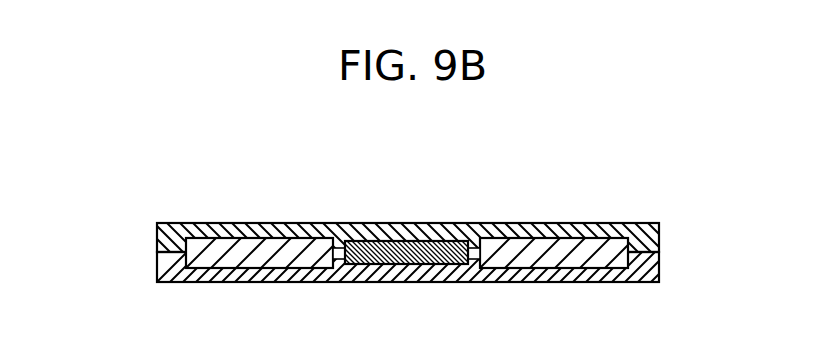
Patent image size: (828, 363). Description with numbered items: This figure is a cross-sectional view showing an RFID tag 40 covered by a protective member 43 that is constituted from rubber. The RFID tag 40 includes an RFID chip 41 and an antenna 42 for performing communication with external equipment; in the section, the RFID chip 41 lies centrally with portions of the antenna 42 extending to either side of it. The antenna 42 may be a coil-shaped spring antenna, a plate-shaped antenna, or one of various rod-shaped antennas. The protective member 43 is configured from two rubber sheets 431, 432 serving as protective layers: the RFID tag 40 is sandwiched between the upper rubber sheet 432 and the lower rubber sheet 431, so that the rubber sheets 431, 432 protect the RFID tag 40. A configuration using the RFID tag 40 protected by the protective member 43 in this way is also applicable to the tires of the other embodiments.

The RFID tag 40 is at (435, 188).
The RFID chip 41 is at (406, 217).
The antenna 42 is at (307, 233).
The protective member 43 is at (355, 265).
The rubber sheet 431 is at (388, 284).
The rubber sheet 432 is at (158, 237).